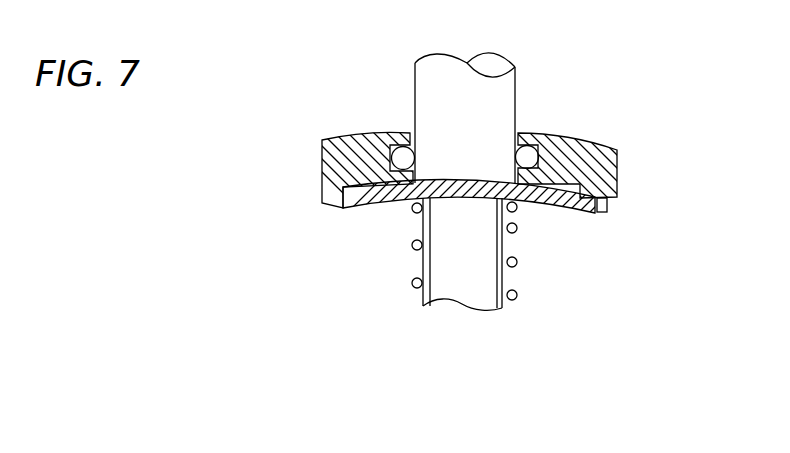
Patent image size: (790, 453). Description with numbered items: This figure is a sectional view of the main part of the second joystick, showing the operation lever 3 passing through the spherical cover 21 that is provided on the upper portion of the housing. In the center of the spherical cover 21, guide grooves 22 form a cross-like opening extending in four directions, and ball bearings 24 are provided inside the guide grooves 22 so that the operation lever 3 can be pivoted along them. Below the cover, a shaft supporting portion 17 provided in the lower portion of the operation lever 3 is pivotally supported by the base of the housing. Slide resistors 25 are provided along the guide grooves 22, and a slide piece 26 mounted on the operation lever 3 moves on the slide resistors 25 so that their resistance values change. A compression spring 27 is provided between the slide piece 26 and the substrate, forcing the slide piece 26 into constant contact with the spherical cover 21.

The operation lever 3 is at (490, 78).
The shaft supporting portion 17 is at (477, 290).
The spherical cover 21 is at (595, 147).
The guide grooves 22 is at (410, 143).
The ball bearings 24 is at (401, 168).
The slide resistors 25 is at (602, 214).
The slide piece 26 is at (548, 205).
The compression spring 27 is at (413, 290).